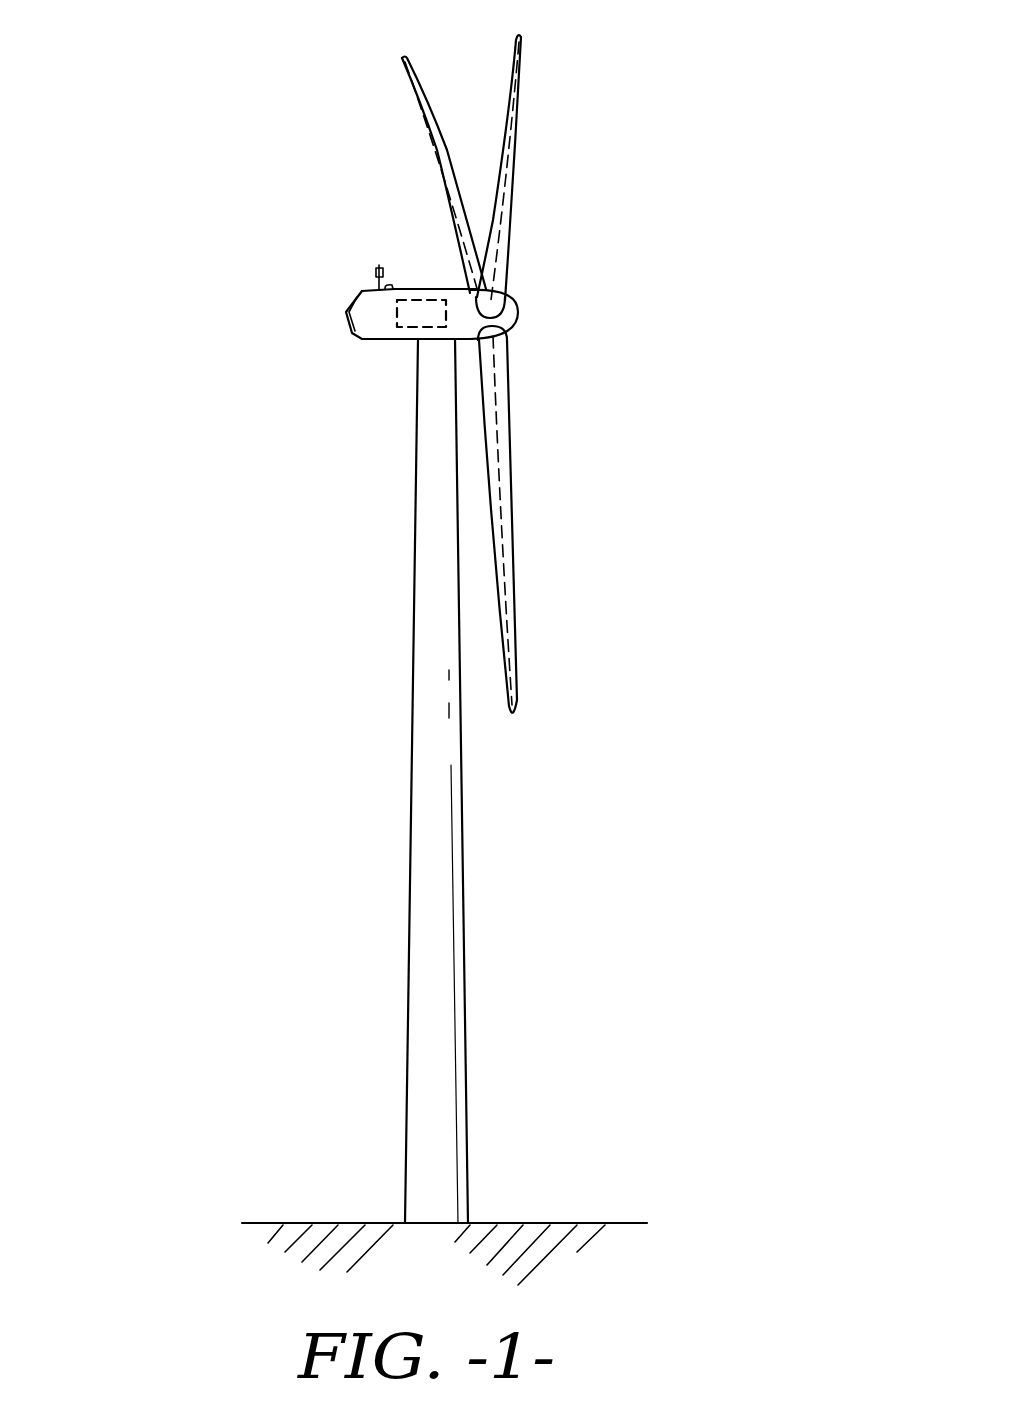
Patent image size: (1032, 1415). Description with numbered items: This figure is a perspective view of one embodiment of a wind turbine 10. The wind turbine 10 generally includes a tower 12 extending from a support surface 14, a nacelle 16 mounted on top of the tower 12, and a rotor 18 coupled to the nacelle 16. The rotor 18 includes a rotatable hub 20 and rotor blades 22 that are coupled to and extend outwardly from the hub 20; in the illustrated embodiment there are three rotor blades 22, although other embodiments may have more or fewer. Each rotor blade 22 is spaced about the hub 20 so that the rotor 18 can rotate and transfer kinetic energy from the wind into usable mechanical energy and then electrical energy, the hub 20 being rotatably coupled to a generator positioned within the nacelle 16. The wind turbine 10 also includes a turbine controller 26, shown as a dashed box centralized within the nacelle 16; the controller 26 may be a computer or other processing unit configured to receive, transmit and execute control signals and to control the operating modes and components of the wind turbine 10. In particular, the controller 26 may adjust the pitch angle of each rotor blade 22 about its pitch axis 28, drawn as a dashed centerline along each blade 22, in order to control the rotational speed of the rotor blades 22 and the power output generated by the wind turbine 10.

The wind turbine 10 is at (624, 120).
The tower 12 is at (423, 903).
The support surface 14 is at (330, 1222).
The nacelle 16 is at (390, 342).
The rotor 18 is at (523, 287).
The rotatable hub 20 is at (518, 318).
The rotor blade 22 is at (512, 78).
The turbine controller 26 is at (425, 300).
The pitch axis 28 is at (440, 187).